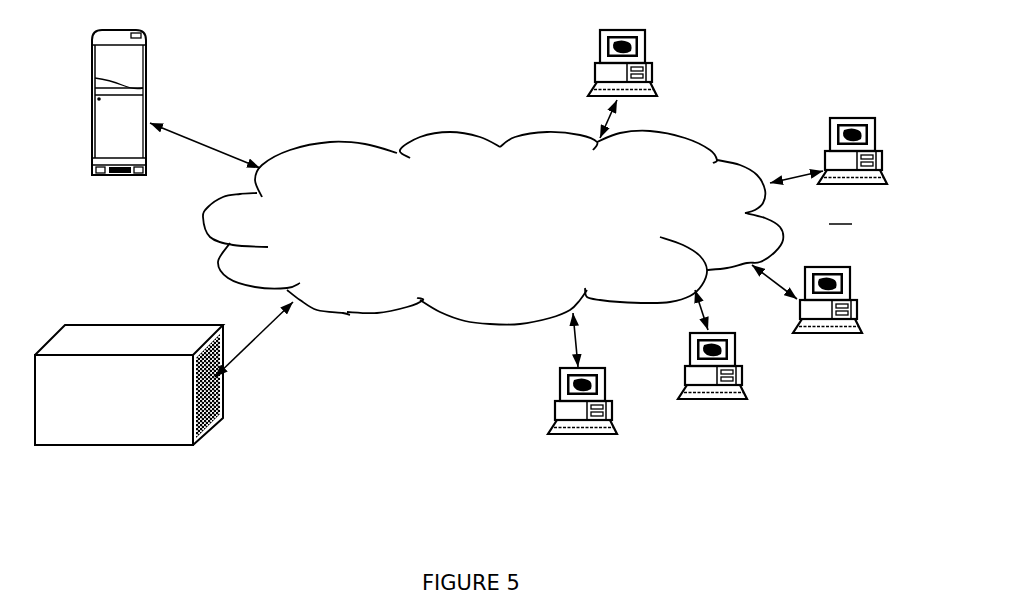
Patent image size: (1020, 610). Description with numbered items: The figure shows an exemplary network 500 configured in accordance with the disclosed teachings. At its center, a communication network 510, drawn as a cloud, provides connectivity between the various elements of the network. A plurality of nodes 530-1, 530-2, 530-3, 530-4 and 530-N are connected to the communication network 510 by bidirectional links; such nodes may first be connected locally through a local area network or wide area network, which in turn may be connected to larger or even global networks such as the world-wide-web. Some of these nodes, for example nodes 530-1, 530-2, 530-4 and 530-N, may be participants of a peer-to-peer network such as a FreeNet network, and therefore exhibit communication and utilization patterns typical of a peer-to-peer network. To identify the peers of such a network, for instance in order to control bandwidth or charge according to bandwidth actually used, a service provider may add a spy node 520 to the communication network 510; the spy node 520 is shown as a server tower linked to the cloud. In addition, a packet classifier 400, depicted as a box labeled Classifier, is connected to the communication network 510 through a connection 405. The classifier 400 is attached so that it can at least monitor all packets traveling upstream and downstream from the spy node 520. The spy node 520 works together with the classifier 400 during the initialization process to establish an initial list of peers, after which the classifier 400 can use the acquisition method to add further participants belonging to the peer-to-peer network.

The packet classifier 400 is at (128, 325).
The connection 405 is at (254, 340).
The network 500 is at (838, 55).
The communication network 510 is at (438, 135).
The spy node 520 is at (88, 114).
The node 530-1 is at (592, 441).
The node 530-2 is at (725, 404).
The node 530-3 is at (847, 337).
The node 530-4 is at (840, 187).
The node 530-N is at (588, 78).